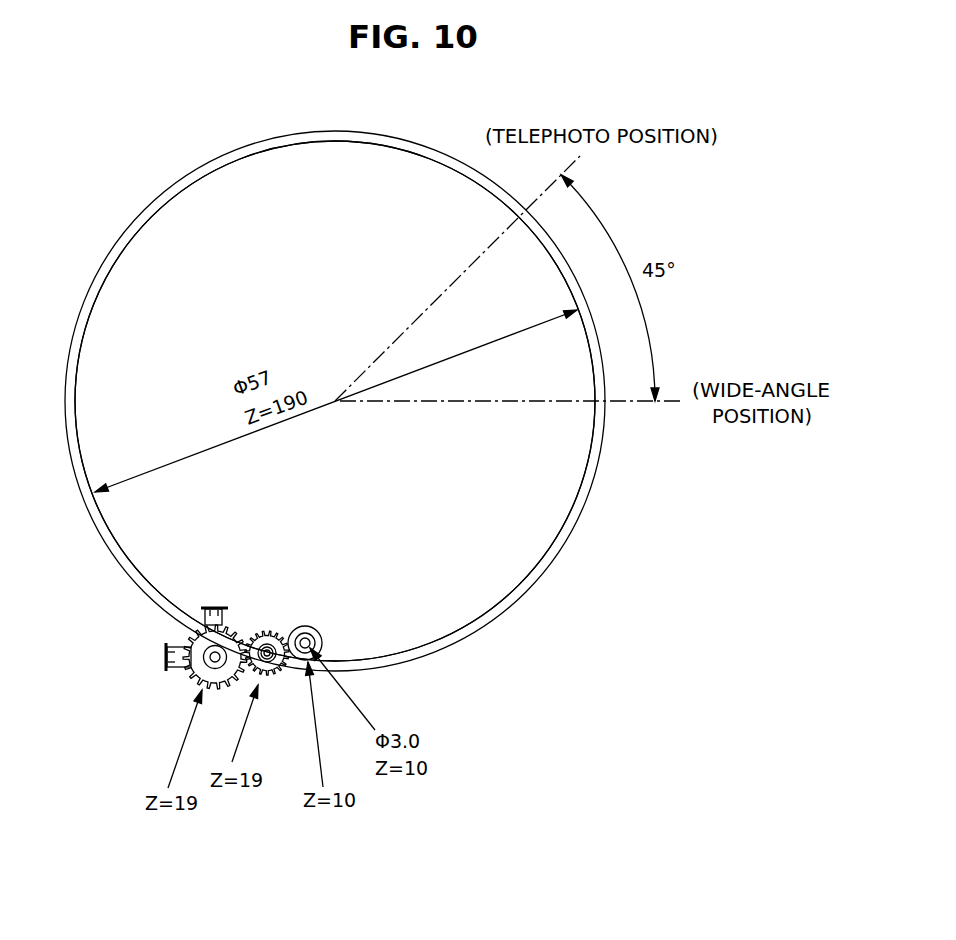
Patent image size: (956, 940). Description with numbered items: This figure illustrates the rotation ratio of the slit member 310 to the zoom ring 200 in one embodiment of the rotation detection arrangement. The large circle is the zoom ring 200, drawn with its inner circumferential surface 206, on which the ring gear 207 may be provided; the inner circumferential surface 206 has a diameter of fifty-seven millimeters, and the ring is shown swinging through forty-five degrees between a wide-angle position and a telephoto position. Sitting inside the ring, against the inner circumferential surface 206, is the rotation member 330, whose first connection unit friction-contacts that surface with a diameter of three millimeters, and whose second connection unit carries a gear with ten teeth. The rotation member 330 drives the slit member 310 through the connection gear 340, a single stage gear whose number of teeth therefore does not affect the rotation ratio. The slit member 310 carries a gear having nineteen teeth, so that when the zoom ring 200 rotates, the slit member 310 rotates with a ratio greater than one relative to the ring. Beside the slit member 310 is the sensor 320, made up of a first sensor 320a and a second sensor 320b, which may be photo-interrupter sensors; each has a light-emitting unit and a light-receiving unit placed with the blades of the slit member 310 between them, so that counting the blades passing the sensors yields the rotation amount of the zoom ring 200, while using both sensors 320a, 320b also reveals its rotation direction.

The zoom ring 200 is at (560, 550).
The inner circumferential surface 206 is at (518, 583).
The ring gear 207 is at (335, 401).
The slit member 310 is at (192, 683).
The sensor 320 is at (130, 633).
The first sensor 320a is at (166, 657).
The second sensor 320b is at (213, 608).
The rotation member 330 is at (307, 632).
The connection gear 340 is at (272, 630).